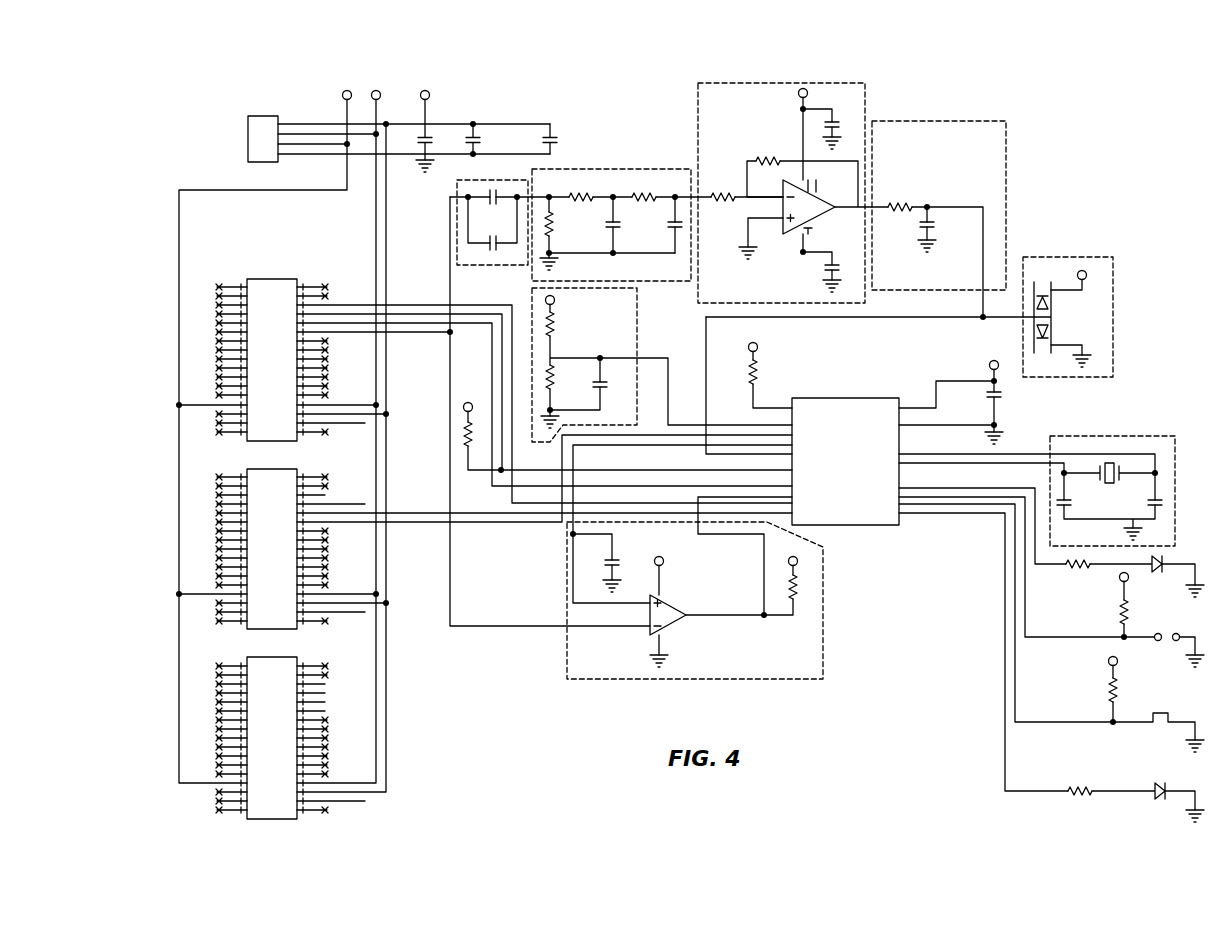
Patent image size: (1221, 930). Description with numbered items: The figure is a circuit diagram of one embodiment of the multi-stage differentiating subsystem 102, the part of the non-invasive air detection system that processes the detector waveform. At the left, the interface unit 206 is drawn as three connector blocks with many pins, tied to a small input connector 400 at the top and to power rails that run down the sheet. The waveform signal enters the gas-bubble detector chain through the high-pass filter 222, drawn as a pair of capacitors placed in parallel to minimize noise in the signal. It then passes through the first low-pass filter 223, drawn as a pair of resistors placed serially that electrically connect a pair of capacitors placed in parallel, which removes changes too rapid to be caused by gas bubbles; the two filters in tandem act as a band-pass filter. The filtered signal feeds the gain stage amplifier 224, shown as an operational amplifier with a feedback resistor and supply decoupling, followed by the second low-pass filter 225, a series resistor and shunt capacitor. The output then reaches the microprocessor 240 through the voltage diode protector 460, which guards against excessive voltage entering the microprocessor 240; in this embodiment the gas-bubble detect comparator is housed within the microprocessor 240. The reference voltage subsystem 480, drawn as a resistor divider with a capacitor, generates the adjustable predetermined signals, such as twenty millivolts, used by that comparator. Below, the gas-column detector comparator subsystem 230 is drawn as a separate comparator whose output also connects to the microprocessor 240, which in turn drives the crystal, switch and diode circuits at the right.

The multi-stage differentiating subsystem 102 is at (855, 59).
The interface unit 206 is at (265, 279).
The high-pass filter 222 is at (457, 222).
The first low-pass filter 223 is at (618, 168).
The gain stage amplifier 224 is at (865, 107).
The second low-pass filter 225 is at (967, 120).
The gas-column detector comparator subsystem 230 is at (823, 606).
The microprocessor 240 is at (848, 398).
The connector 400 is at (263, 116).
The voltage diode protector 460 is at (1072, 257).
The reference voltage subsystem 480 is at (532, 296).